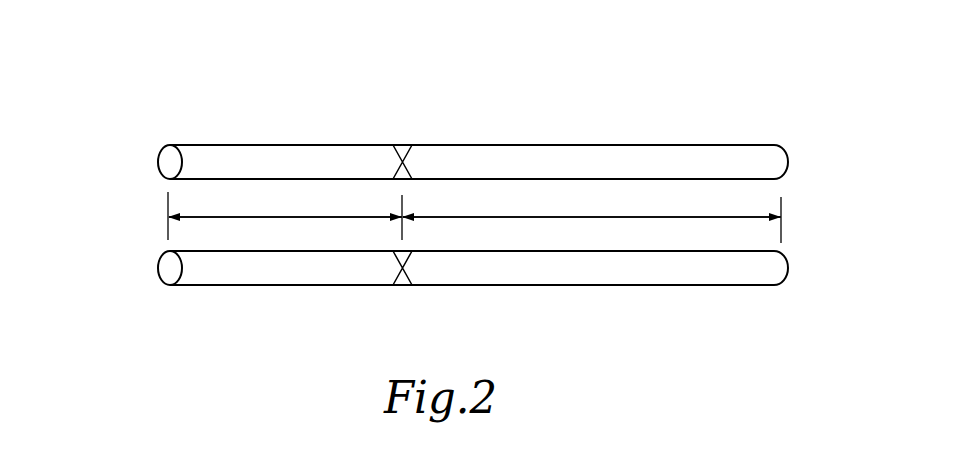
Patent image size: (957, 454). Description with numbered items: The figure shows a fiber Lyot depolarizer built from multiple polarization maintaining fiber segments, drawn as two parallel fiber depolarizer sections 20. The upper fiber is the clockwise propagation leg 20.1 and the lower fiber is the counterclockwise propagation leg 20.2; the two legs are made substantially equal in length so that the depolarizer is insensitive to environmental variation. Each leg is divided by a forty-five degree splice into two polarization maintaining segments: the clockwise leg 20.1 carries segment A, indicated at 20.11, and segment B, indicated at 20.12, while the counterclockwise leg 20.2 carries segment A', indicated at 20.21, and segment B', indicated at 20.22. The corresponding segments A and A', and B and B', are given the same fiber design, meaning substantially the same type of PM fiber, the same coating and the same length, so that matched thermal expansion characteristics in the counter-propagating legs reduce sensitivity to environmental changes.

The fiber depolarizer section 20 is at (477, 98).
The clockwise propagation leg 20.1 is at (166, 163).
The counterclockwise propagation leg 20.2 is at (791, 268).
The region A of first rod section 20.11 is at (285, 144).
The region B of first rod section 20.12 is at (602, 144).
The region A' of second rod section 20.21 is at (278, 287).
The region B' of second rod section 20.22 is at (635, 287).